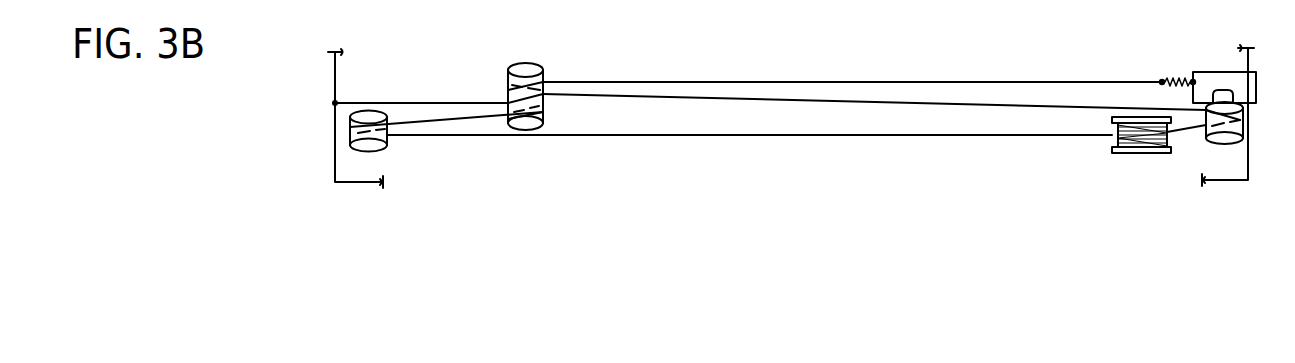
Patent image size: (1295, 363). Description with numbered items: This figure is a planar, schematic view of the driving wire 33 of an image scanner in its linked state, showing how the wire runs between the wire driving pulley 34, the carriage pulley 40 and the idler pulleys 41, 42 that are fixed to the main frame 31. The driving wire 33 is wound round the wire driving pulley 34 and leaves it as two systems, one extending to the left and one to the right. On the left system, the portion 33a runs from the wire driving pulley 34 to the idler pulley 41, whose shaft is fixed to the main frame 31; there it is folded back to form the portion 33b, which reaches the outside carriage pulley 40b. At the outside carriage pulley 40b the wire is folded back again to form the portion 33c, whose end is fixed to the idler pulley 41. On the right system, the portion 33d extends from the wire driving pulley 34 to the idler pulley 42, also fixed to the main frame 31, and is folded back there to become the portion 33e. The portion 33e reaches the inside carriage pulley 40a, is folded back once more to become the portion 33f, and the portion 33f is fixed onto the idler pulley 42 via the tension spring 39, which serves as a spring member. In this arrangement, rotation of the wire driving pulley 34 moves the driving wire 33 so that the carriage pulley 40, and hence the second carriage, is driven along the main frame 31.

The main frame 31 is at (335, 84).
The driving wire 33 is at (787, 107).
The portion of the driving wire 33a is at (805, 137).
The portion of the driving wire 33b is at (452, 123).
The portion of the driving wire 33c is at (419, 102).
The portion of the driving wire 33d is at (1190, 136).
The portion of the driving wire 33e is at (888, 99).
The portion of the driving wire 33f is at (686, 82).
The wire driving pulley 34 is at (1130, 154).
The tension spring 39 is at (1176, 79).
The carriage pulley 40 is at (549, 58).
The inside carriage pulley 40a is at (528, 62).
The outside carriage pulley 40b is at (525, 129).
The idler pulley 41 is at (375, 150).
The idler pulley 42 is at (1225, 142).